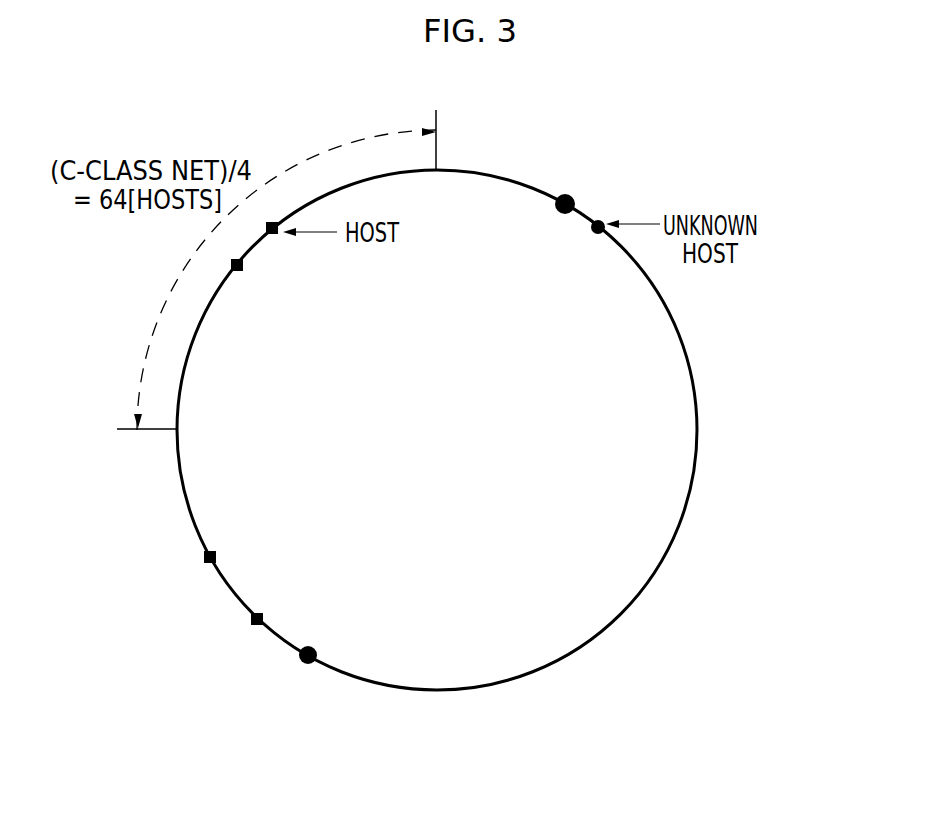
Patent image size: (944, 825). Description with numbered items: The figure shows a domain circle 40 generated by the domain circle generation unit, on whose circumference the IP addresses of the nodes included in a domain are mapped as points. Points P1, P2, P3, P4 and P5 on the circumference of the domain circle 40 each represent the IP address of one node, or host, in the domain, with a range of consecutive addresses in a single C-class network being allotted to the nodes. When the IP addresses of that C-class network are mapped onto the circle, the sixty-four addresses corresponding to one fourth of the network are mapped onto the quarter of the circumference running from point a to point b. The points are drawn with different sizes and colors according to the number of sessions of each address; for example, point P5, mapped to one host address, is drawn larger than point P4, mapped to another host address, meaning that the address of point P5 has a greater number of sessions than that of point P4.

The domain circle 40 is at (704, 445).
The point on the circumference P1 is at (565, 196).
The point on the circumference P2 is at (273, 221).
The point on the circumference P3 is at (231, 264).
The point on the circumference P4 is at (205, 557).
The point on the circumference P5 is at (300, 657).
The point a is at (437, 162).
The point b is at (168, 430).